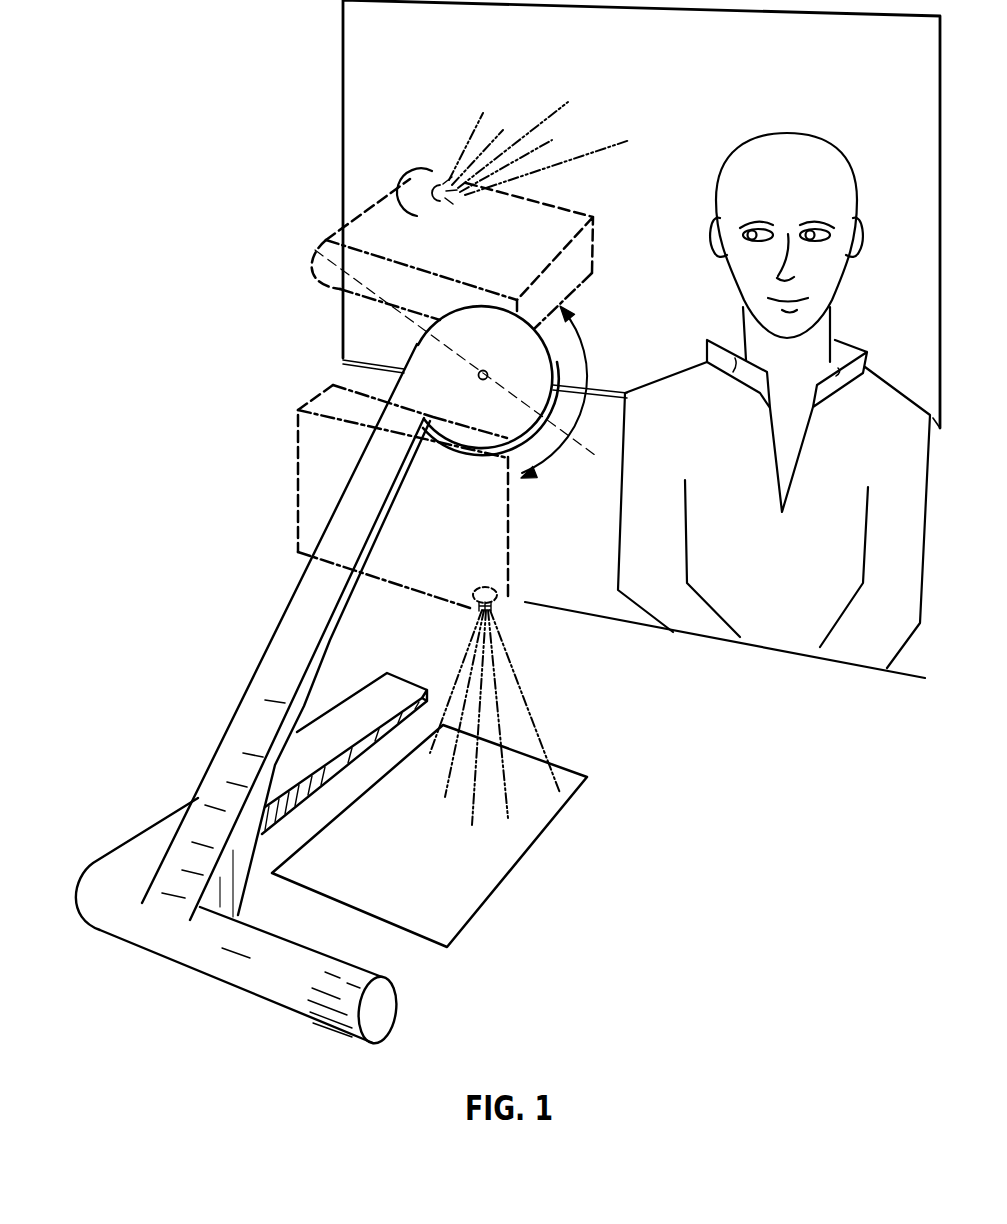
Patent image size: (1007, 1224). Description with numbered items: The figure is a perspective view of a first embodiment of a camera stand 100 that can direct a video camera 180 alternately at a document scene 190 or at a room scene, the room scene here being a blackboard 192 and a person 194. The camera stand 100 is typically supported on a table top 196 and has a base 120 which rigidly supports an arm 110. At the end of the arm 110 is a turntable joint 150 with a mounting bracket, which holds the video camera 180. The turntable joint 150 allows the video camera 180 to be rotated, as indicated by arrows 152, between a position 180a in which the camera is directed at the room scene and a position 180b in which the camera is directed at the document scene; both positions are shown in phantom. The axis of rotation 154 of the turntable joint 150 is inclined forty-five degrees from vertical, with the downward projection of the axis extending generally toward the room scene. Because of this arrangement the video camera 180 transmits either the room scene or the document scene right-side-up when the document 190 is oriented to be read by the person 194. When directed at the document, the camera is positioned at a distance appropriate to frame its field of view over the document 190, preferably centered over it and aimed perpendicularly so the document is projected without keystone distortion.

The camera stand 100 is at (232, 670).
The arm 110 is at (278, 742).
The base 120 is at (364, 740).
The turntable joint 150 is at (512, 420).
The arrows 152 is at (587, 378).
The axis of rotation 154 is at (589, 451).
The video camera 180 is at (330, 232).
The position 180a is at (500, 253).
The position 180b is at (465, 548).
The document scene 190 is at (483, 866).
The blackboard 192 is at (714, 113).
The person 194 is at (803, 193).
The table top 196 is at (738, 808).